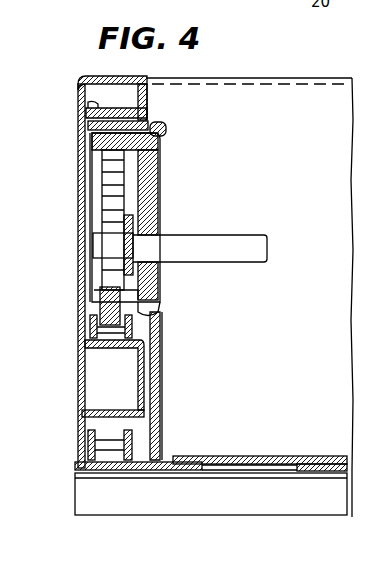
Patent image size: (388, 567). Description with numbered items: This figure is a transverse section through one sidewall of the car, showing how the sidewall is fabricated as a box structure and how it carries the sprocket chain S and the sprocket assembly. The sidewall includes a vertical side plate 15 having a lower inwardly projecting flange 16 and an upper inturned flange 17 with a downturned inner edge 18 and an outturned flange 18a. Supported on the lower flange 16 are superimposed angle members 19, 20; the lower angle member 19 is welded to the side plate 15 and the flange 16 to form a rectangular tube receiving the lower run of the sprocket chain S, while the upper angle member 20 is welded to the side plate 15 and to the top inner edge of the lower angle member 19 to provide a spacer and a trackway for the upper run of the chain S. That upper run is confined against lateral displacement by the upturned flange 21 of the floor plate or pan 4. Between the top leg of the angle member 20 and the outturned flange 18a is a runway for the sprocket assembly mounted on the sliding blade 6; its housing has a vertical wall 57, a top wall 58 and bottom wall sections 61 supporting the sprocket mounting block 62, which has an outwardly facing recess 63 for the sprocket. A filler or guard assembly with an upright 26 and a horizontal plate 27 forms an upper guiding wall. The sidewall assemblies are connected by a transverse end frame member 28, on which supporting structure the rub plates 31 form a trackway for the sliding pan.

The floor plate or pan 4 is at (247, 458).
The sliding blade 6 is at (264, 98).
The vertical side plate 15 is at (82, 300).
The lower inwardly projecting flange 16 is at (176, 462).
The upper inturned flange 17 is at (104, 76).
The downturned inner edge 18 is at (133, 104).
The outturned flange 18a is at (96, 103).
The lower angle member 19 is at (102, 412).
The upper angle member 20 is at (87, 344).
The upturned flange 21 is at (160, 380).
The upright 26 is at (148, 106).
The horizontal plate 27 is at (98, 120).
The transverse end frame member 28 is at (238, 497).
The rub plate 31 is at (310, 459).
The vertical wall 57 is at (163, 200).
The top wall 58 is at (158, 133).
The supporting bottom wall section 61 is at (158, 312).
The sprocket mounting block 62 is at (140, 178).
The elongated outwardly facing recess 63 is at (128, 184).
The sprocket chain S is at (92, 330).